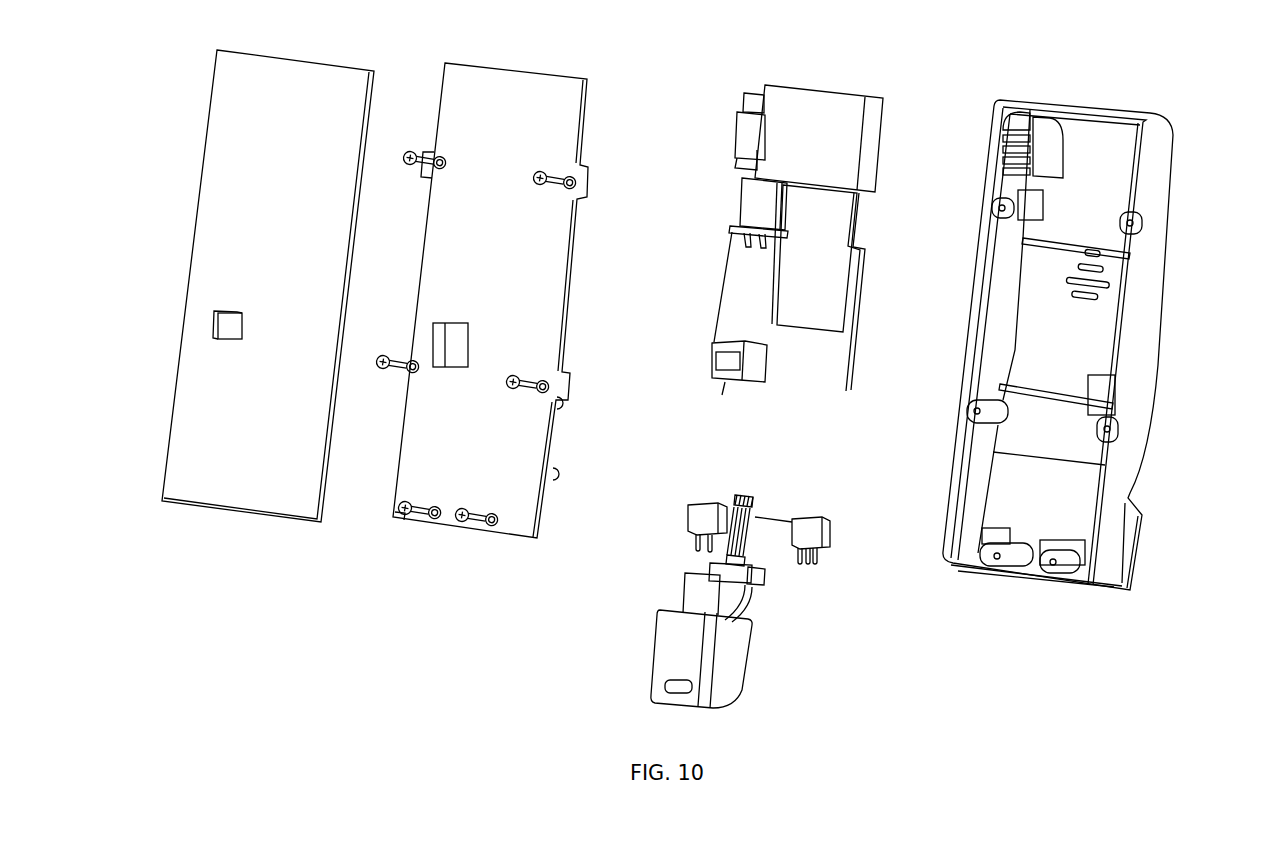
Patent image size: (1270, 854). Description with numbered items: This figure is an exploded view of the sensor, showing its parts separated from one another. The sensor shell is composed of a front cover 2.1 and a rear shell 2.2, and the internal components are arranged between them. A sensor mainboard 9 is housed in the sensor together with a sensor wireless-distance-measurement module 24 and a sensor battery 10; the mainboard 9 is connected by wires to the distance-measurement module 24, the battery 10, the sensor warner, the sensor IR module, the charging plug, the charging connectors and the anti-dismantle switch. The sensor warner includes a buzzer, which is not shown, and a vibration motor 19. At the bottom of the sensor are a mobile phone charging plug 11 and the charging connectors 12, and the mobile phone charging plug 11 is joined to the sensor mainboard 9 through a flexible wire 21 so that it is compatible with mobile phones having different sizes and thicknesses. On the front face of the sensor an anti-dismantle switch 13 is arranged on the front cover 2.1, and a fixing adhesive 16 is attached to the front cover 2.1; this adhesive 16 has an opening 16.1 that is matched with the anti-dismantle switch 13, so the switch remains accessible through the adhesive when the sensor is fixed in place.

The front cover 2.1 is at (513, 95).
The rear shell 2.2 is at (1148, 338).
The sensor mainboard 9 is at (823, 428).
The sensor battery 10 is at (843, 145).
The mobile phone charging plug 11 is at (685, 638).
The charging connectors 12 is at (700, 515).
The anti-dismantle switch 13 is at (720, 360).
The sample fixing adhesive 16 is at (232, 178).
The opening 16.1 is at (222, 330).
The vibration motor 19 is at (748, 138).
The flexible wire 21 is at (745, 600).
The sensor wireless-distance-measurement module 24 is at (818, 227).